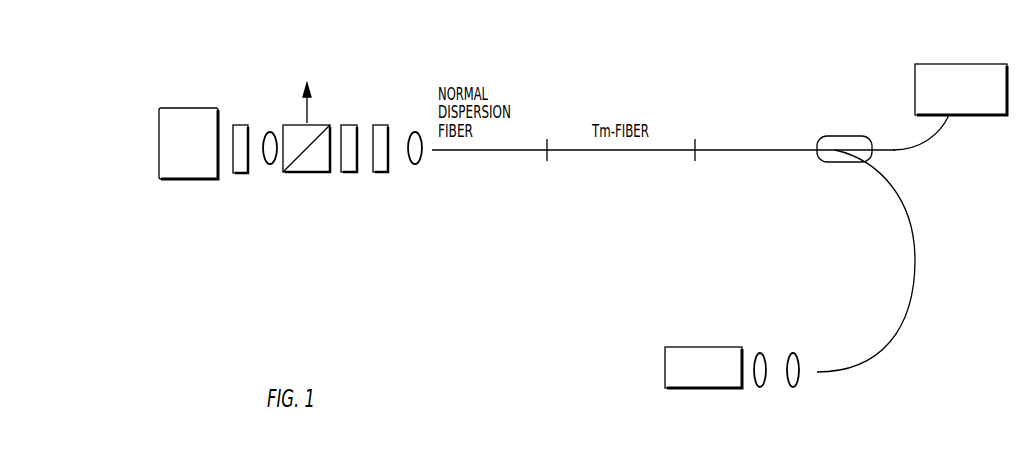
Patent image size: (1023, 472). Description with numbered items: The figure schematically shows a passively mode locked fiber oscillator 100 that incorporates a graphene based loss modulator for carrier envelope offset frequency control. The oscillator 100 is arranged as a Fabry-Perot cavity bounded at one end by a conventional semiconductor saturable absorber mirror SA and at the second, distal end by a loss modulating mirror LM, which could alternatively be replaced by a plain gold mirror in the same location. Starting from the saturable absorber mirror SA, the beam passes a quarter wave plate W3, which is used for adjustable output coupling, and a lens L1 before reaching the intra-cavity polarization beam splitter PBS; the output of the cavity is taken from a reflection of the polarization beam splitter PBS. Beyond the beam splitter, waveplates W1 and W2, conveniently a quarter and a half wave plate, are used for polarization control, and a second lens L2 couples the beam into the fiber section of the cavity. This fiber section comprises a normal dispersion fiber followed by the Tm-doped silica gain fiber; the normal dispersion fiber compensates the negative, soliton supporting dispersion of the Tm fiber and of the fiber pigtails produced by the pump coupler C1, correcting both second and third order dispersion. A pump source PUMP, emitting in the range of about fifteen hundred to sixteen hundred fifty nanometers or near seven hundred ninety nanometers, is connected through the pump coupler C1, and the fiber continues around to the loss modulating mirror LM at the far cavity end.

The passively mode locked fiber oscillator 100 is at (432, 290).
The semiconductor saturable absorber mirror SA is at (188, 143).
The quarter wave plate W3 is at (241, 138).
The lens L1 is at (271, 165).
The intra-cavity polarization beam splitter PBS is at (307, 129).
The waveplate W1 is at (351, 162).
The waveplate W2 is at (382, 162).
The lens L2 is at (416, 165).
The pump coupler C1 is at (844, 136).
The pump source PUMP is at (961, 89).
The loss modulating mirror LM is at (703, 367).